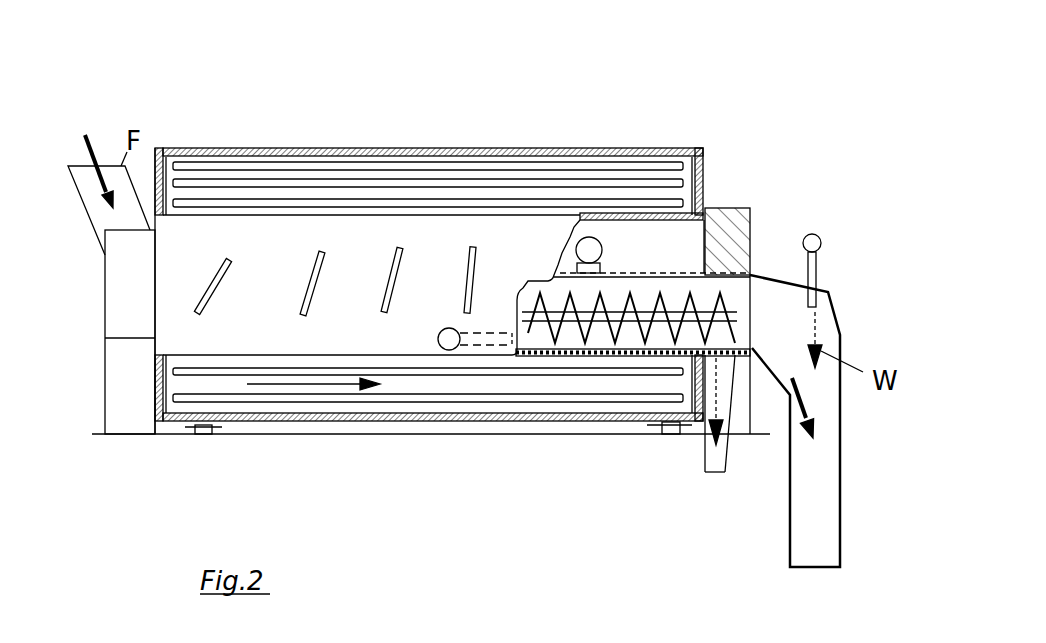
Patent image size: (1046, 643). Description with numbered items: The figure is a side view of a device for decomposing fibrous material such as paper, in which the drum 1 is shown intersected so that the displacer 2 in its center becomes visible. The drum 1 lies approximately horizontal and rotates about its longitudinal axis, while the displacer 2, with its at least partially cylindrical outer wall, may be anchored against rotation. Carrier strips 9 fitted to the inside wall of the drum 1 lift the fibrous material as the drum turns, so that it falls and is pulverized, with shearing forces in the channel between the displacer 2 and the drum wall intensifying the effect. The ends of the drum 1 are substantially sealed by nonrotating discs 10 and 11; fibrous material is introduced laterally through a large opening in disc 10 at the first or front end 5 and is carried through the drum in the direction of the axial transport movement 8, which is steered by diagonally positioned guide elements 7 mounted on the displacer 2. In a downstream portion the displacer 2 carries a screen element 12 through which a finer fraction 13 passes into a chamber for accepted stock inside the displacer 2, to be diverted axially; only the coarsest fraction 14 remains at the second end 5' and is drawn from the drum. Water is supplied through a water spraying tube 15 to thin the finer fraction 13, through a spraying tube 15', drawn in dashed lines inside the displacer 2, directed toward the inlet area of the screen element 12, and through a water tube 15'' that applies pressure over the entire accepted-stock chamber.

The drum 1 is at (580, 148).
The displacer 2 is at (277, 299).
The first or front end 5 is at (111, 229).
The second end 5' is at (738, 172).
The guide elements 7 is at (232, 257).
The axial transport movement 8 is at (340, 385).
The carrier strips 9 is at (460, 367).
The nonrotating disc 10 is at (127, 465).
The nonrotating disc 11 is at (704, 189).
The screen element 12 is at (600, 357).
The finer fraction 13 is at (810, 428).
The coarsest fraction 14 is at (725, 437).
The water spraying tube 15 is at (854, 255).
The spraying tube 15' is at (457, 318).
The water tube 15'' is at (630, 255).